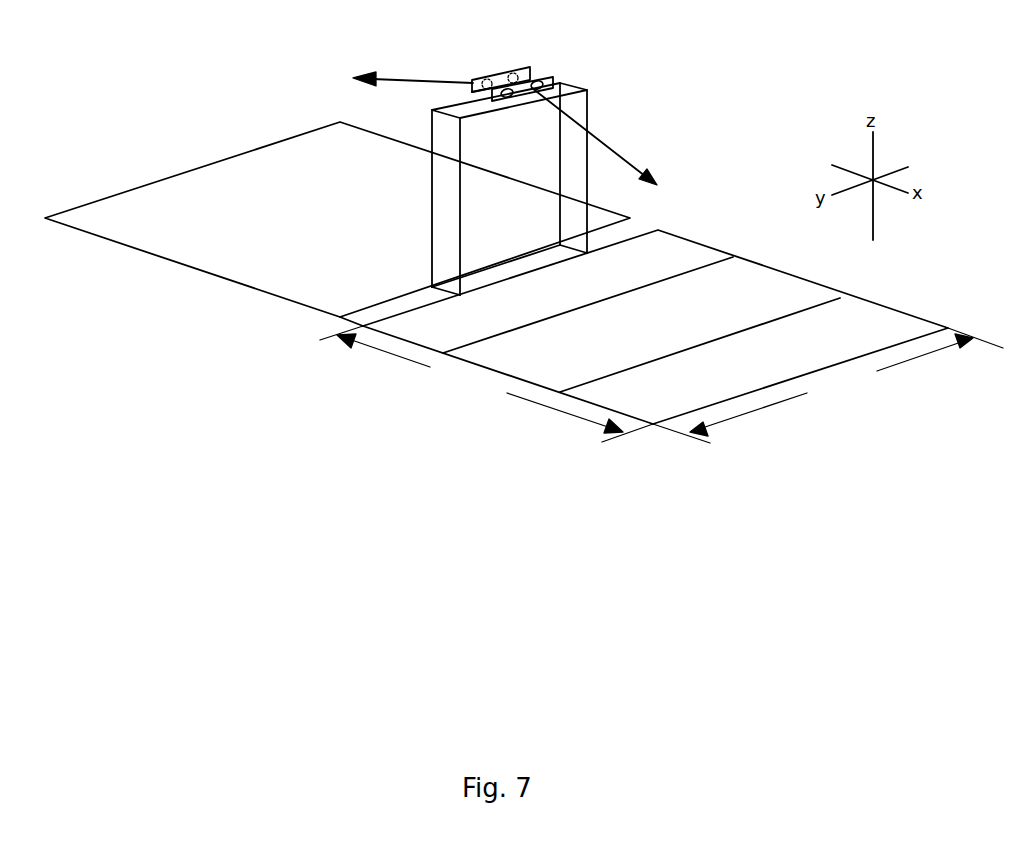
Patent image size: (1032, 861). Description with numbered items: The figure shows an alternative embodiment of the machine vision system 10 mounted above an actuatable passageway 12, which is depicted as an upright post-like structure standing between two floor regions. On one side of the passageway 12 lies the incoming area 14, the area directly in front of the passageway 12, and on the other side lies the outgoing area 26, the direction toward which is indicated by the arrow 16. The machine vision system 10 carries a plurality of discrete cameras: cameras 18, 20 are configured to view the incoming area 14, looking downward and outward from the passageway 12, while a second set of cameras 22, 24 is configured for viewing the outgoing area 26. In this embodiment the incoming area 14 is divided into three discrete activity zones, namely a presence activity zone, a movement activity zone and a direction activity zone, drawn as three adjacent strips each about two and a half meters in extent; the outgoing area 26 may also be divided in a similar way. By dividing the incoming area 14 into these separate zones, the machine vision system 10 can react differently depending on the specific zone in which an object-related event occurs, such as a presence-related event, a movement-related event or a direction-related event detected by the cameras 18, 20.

The machine vision system 10 is at (534, 94).
The actuatable passageway 12 is at (461, 177).
The incoming area 14 is at (953, 303).
The arrow 16 is at (424, 81).
The camera 18 is at (503, 97).
The camera 20 is at (540, 79).
The camera 22 is at (484, 81).
The camera 24 is at (517, 72).
The outgoing area 26 is at (337, 219).